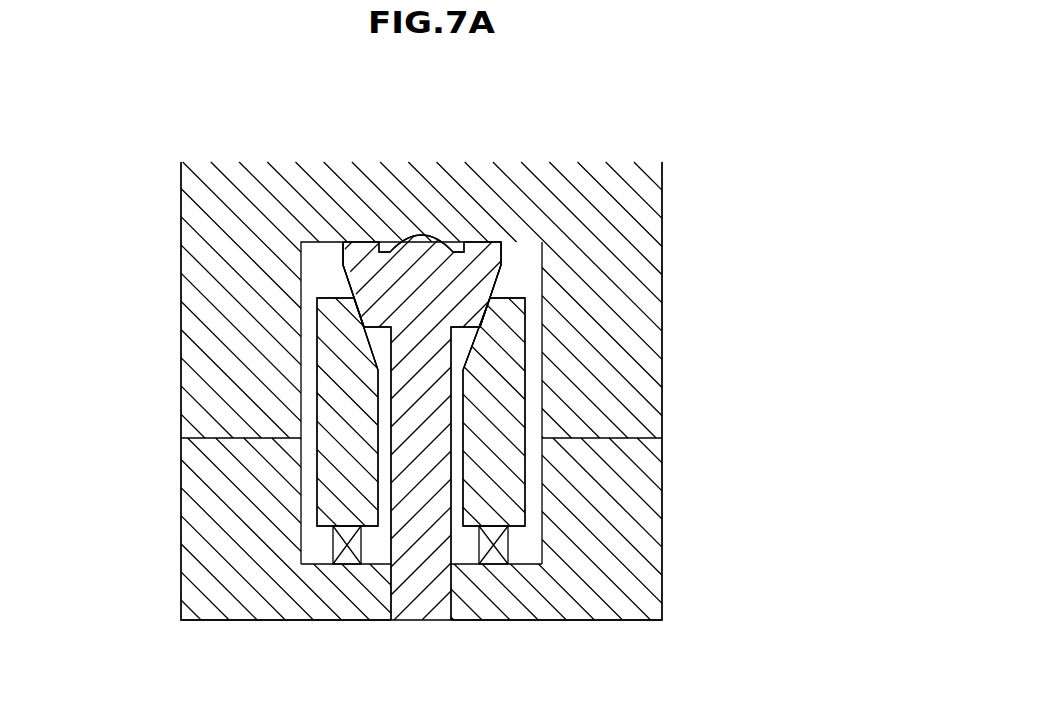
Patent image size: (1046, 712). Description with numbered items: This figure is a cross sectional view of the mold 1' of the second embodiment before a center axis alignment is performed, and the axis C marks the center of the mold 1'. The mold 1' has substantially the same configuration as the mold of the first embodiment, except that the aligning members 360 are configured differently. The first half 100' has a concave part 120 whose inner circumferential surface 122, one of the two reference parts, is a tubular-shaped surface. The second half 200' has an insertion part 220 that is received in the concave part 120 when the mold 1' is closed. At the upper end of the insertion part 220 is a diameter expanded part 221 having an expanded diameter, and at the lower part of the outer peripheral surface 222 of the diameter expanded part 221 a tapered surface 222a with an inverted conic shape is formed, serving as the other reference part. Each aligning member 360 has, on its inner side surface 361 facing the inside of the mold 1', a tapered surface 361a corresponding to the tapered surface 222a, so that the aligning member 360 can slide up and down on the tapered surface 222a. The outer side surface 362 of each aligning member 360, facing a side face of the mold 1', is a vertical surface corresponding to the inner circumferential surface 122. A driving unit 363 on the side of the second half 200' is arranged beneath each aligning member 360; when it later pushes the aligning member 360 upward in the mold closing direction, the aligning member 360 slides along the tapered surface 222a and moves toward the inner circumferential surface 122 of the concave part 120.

The mold 1' is at (754, 123).
The first half 100' is at (481, 391).
The concave part 120 is at (320, 268).
The inner circumferential surface 122 is at (300, 408).
The second half 200' is at (585, 426).
The insertion part 220 is at (453, 345).
The diameter expanded part 221 is at (492, 265).
The outer peripheral surface 222 is at (486, 318).
The tapered surface 222a is at (486, 318).
The aligning member 360 is at (340, 461).
The inner side surface 361 is at (305, 412).
The tapered surface 361a is at (373, 367).
The outer side surface 362 is at (315, 487).
The driving unit 363 is at (352, 553).
The center axis C is at (432, 232).